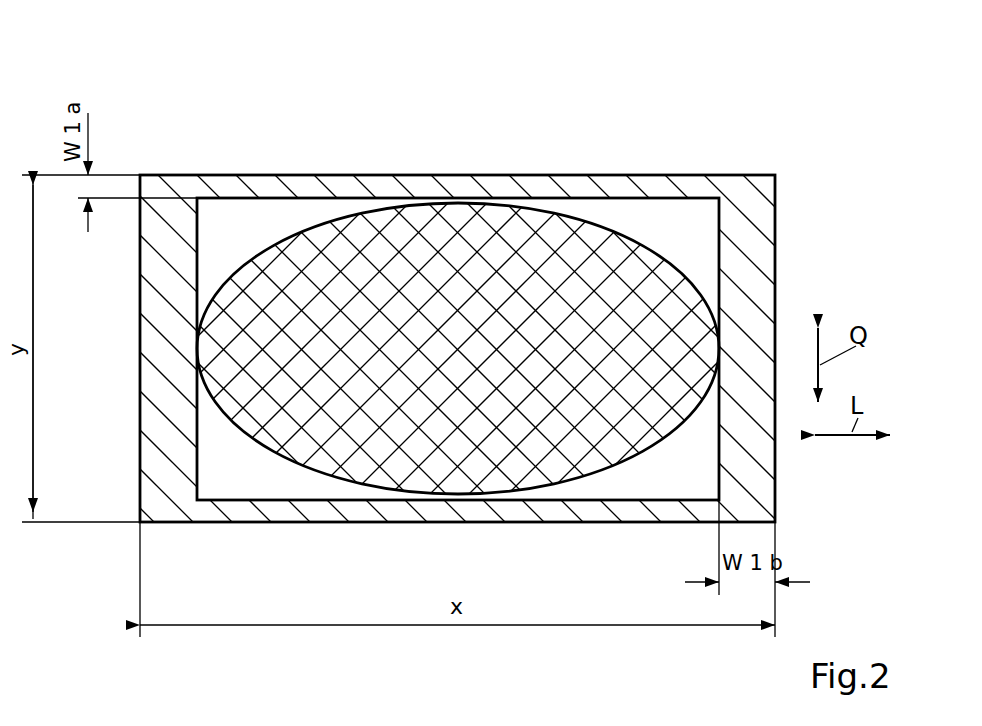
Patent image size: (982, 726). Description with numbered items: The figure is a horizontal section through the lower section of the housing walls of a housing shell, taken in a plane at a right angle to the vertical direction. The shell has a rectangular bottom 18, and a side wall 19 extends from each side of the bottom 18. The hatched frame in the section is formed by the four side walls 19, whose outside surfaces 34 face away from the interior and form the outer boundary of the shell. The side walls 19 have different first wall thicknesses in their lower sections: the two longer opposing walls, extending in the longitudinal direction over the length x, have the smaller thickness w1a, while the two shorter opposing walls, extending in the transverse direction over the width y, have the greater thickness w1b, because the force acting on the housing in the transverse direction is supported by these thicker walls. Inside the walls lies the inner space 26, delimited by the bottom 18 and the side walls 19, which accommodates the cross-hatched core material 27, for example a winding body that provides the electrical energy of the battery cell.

The outside surface 34 is at (214, 172).
The side wall 19 is at (592, 188).
The bottom 18 is at (292, 218).
The core material 27 is at (445, 238).
The inner space 26 is at (240, 475).